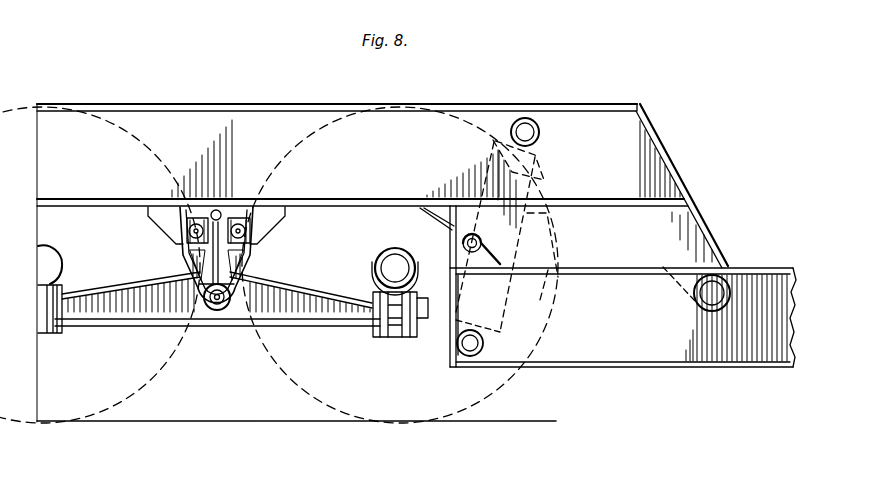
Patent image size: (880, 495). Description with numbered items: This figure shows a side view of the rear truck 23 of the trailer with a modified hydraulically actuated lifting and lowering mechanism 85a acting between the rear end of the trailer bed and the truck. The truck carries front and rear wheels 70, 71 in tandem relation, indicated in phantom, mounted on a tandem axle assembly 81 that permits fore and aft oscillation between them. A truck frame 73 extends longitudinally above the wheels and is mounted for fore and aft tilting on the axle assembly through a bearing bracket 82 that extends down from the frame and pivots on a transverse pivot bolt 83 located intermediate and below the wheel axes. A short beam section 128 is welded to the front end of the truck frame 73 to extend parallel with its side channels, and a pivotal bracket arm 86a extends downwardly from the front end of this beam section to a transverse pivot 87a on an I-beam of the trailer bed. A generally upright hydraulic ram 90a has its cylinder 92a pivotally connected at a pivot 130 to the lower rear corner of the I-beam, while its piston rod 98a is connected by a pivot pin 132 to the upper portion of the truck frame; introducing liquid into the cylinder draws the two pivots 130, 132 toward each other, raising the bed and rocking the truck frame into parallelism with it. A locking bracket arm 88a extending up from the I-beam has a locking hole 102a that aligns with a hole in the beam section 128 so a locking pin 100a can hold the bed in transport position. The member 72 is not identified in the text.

The rear truck 23 is at (132, 102).
The truck frame 73 is at (271, 127).
The frame cross member 72 is at (600, 120).
The hydraulically actuated lifting and lowering mechanism 85a is at (689, 158).
The beam section 128 is at (670, 226).
The transverse pivot 87a is at (716, 305).
The pivotal bracket arm 86a is at (679, 278).
The rear wheel 71 is at (118, 398).
The front wheel 70 is at (300, 391).
The hydraulic ram 90a is at (498, 168).
The tandem axle assembly 81 is at (200, 320).
The bearing bracket 82 is at (230, 217).
The transverse pivot bolt 83 is at (219, 312).
The locking pin 100a is at (462, 243).
The locking bracket arm 88a is at (482, 256).
The locking hole 102a is at (473, 273).
The cylinder 92a is at (533, 220).
The piston rod 98a is at (533, 157).
The pivot pin 132 is at (539, 132).
The pivot 130 is at (468, 354).